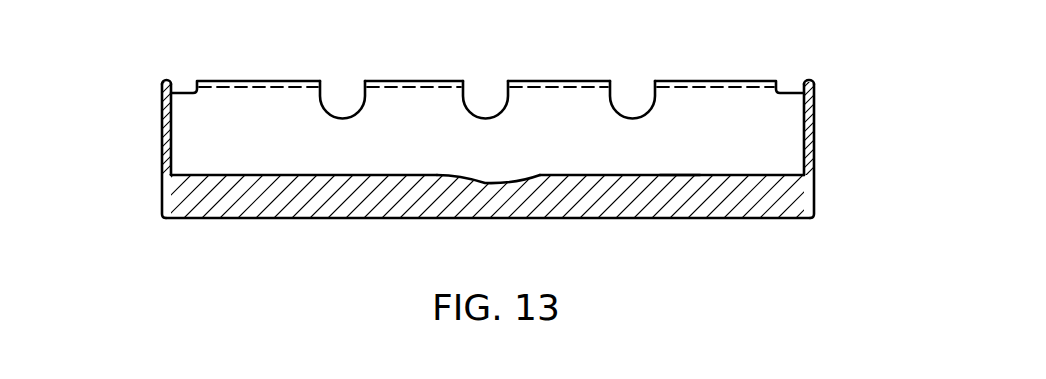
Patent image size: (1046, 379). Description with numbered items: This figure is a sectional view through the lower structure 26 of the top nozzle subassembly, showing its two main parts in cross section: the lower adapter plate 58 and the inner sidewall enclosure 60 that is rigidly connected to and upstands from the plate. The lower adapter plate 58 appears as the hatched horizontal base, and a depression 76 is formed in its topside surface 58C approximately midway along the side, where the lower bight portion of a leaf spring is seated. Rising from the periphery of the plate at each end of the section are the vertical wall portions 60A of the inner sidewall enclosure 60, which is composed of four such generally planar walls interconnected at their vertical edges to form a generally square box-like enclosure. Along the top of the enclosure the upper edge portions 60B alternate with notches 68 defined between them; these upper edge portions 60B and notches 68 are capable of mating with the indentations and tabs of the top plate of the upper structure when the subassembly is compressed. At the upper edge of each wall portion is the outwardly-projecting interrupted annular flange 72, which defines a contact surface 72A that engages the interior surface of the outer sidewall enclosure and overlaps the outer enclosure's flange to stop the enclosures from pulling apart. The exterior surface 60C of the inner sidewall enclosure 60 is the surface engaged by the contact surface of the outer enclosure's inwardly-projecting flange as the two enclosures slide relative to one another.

The lower structure 26 is at (700, 63).
The lower adapter plate 58 is at (347, 222).
The topside surface 58C is at (666, 172).
The inner sidewall enclosure 60 is at (813, 122).
The vertical wall portions 60A is at (162, 137).
The upper edge portions 60B is at (169, 81).
The exterior surface 60C is at (162, 163).
The notches 68 is at (495, 113).
The outwardly-projecting interrupted annular flange 72 is at (164, 80).
The contact surface 72A is at (162, 86).
The depression 76 is at (493, 183).